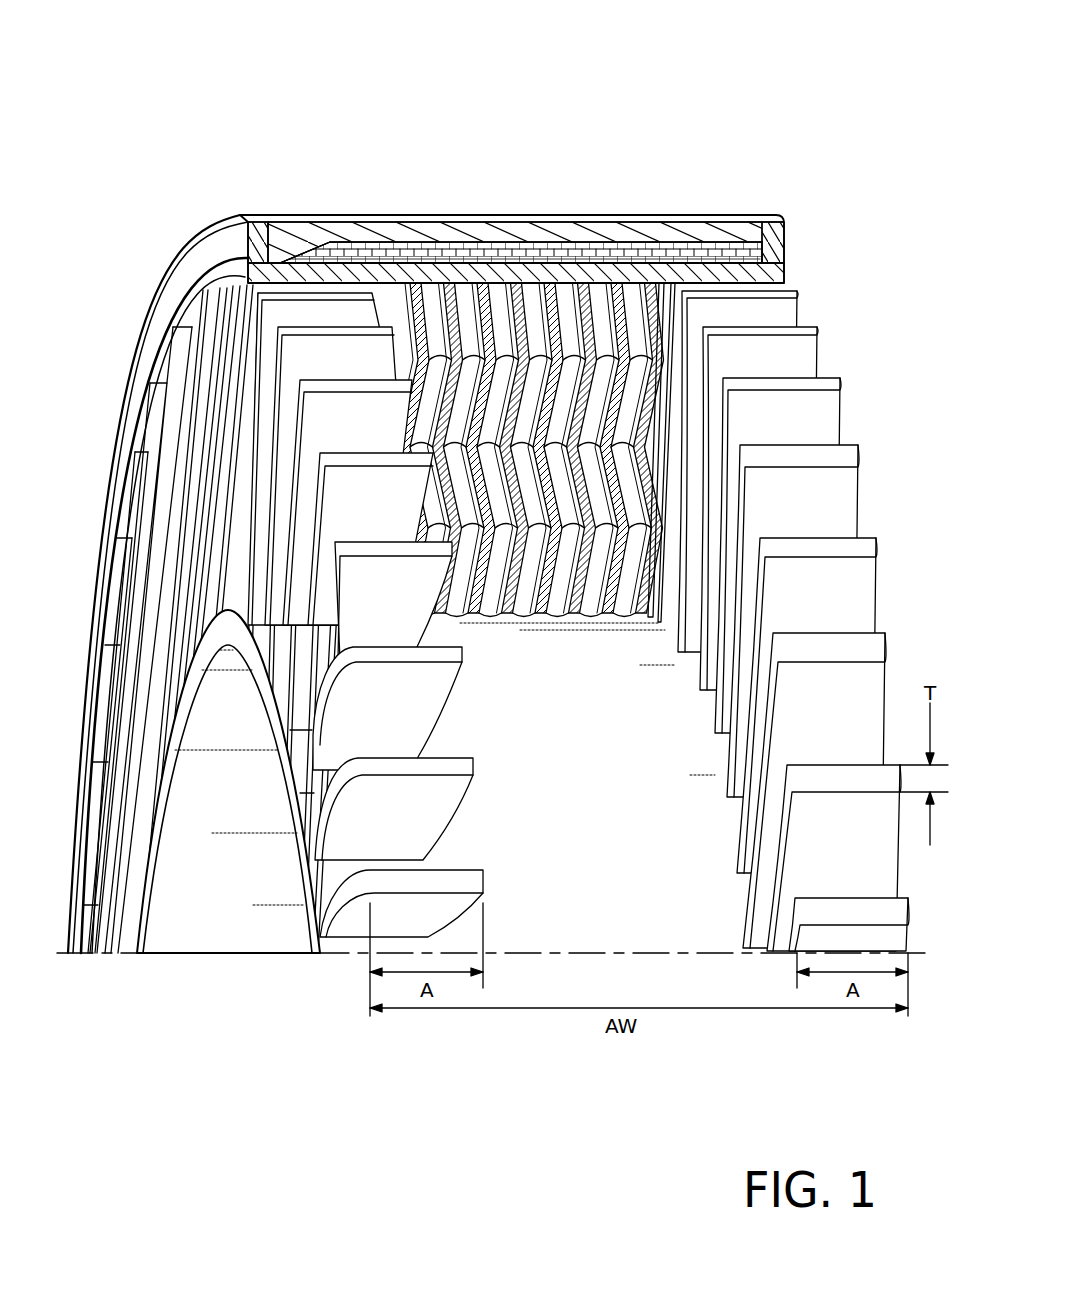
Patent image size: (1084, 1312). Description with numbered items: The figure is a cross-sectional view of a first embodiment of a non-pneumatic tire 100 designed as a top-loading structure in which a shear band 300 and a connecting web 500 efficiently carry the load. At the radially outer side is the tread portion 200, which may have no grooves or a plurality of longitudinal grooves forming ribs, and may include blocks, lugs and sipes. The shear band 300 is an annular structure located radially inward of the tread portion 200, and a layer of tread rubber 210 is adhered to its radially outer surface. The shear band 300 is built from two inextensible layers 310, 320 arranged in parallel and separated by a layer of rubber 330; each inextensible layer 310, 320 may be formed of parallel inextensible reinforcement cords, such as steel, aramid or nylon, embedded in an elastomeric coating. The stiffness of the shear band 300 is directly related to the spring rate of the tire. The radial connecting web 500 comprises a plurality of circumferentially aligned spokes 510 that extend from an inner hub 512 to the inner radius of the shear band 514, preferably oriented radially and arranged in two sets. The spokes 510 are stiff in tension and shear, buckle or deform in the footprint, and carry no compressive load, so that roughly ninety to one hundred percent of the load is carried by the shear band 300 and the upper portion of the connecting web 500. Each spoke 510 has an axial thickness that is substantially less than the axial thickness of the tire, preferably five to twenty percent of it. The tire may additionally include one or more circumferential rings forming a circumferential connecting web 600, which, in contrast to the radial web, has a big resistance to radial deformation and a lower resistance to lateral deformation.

The non-pneumatic tire 100 is at (183, 137).
The tread portion 200 is at (589, 173).
The layer of tread rubber 210 is at (505, 233).
The shear band 300 is at (593, 173).
The inextensible layer 310 is at (727, 250).
The inextensible layer 320 is at (727, 260).
The layer of rubber 330 is at (537, 243).
The connecting web 500 is at (130, 572).
The spokes 510 is at (818, 428).
The inner hub 512 is at (632, 862).
The inner radius of the shear band 514 is at (210, 290).
The circumferential connecting web 600 is at (578, 296).